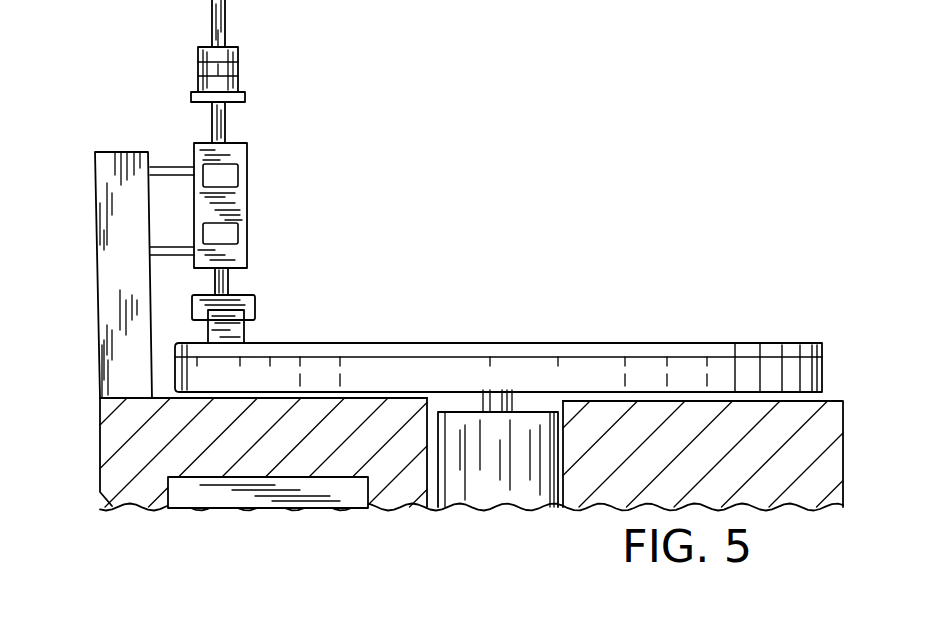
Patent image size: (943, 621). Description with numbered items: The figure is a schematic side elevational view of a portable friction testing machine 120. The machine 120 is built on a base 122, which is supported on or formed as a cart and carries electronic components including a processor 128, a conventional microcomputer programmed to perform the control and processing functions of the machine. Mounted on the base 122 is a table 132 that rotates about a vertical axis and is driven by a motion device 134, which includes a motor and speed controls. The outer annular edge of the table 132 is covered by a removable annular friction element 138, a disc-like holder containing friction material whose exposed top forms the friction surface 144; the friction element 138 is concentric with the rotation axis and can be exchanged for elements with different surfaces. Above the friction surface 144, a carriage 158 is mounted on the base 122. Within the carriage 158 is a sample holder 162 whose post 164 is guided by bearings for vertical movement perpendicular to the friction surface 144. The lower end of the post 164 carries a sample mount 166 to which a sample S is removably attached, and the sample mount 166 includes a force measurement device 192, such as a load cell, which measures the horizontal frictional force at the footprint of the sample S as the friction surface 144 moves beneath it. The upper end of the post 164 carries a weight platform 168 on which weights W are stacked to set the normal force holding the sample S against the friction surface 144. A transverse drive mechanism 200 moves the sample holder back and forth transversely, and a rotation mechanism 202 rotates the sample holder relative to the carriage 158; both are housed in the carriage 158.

The portable friction testing machine 120 is at (91, 110).
The weights W is at (198, 52).
The weight platform 168 is at (244, 97).
The post 164 is at (212, 125).
The sample holder 162 is at (221, 71).
The carriage 158 is at (247, 203).
The transverse drive mechanism 200 is at (238, 175).
The rotation mechanism 202 is at (239, 238).
The sample mount 166 is at (193, 316).
The force measurement device 192 is at (192, 308).
The sample S is at (208, 332).
The friction surface 144 is at (466, 343).
The removable annular friction element 138 is at (735, 346).
The table 132 is at (828, 368).
The base 122 is at (100, 476).
The processor 128 is at (303, 477).
The motion device 134 is at (583, 452).